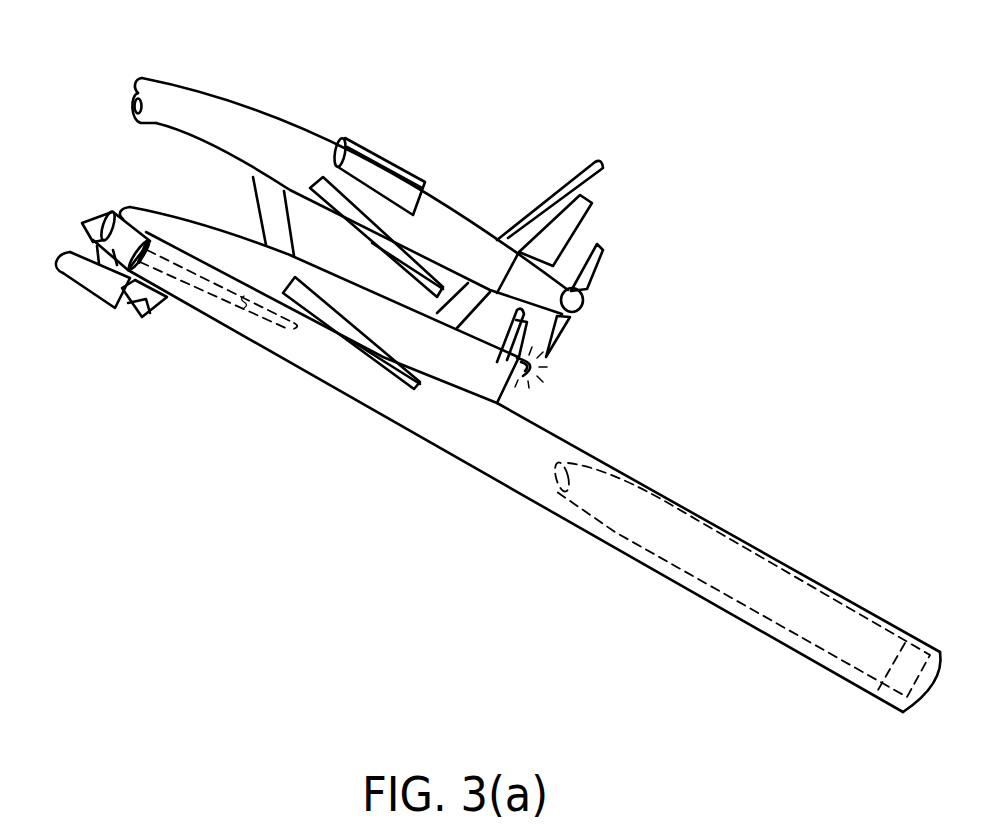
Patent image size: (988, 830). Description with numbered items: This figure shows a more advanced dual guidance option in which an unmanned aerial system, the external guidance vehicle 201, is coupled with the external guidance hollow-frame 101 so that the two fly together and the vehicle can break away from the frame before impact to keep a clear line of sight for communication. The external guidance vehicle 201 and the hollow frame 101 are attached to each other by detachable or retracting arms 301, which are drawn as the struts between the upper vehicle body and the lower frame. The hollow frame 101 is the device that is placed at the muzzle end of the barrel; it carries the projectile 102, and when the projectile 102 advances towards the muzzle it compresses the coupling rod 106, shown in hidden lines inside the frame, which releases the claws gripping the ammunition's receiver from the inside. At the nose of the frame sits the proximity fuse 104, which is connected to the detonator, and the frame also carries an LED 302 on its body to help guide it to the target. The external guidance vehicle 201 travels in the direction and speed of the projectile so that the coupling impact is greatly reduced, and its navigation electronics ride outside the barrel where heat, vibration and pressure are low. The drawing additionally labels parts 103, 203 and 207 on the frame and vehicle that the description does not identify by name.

The external guidance hollow-frame 101 is at (228, 252).
The projectile 102 is at (741, 587).
The hatch / access panel 103 is at (772, 553).
The proximity fuse 104 is at (92, 214).
The coupling rod 106 is at (232, 293).
The external guidance vehicle 201 is at (275, 133).
The cylindrical pod on upper fuselage 203 is at (372, 175).
The propeller 207 is at (593, 275).
The detachable or retracting arms 301 is at (282, 230).
The LED 302 is at (526, 372).